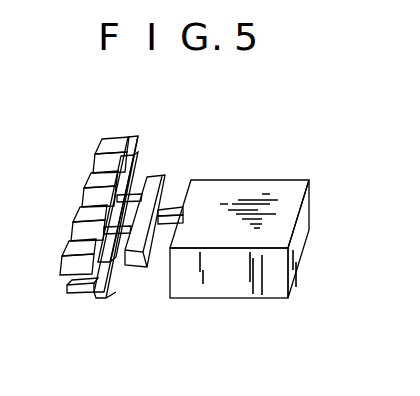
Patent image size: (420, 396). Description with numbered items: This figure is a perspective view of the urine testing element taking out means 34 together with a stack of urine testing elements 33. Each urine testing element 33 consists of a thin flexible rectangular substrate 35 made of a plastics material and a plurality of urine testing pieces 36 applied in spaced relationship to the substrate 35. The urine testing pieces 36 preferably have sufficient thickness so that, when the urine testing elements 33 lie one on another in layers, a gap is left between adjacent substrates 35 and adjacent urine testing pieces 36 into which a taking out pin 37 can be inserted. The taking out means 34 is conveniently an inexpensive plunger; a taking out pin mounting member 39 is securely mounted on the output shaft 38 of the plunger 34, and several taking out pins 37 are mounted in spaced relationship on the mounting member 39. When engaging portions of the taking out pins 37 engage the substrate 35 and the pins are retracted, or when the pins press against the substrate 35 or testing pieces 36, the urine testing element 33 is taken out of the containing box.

The urine testing element 33 is at (70, 224).
The urine testing element taking out means 34 is at (268, 172).
The substrate 35 is at (95, 187).
The urine testing pieces 36 is at (100, 163).
The taking out pin 37 is at (137, 194).
The output shaft 38 is at (172, 207).
The taking out pin mounting member 39 is at (159, 177).